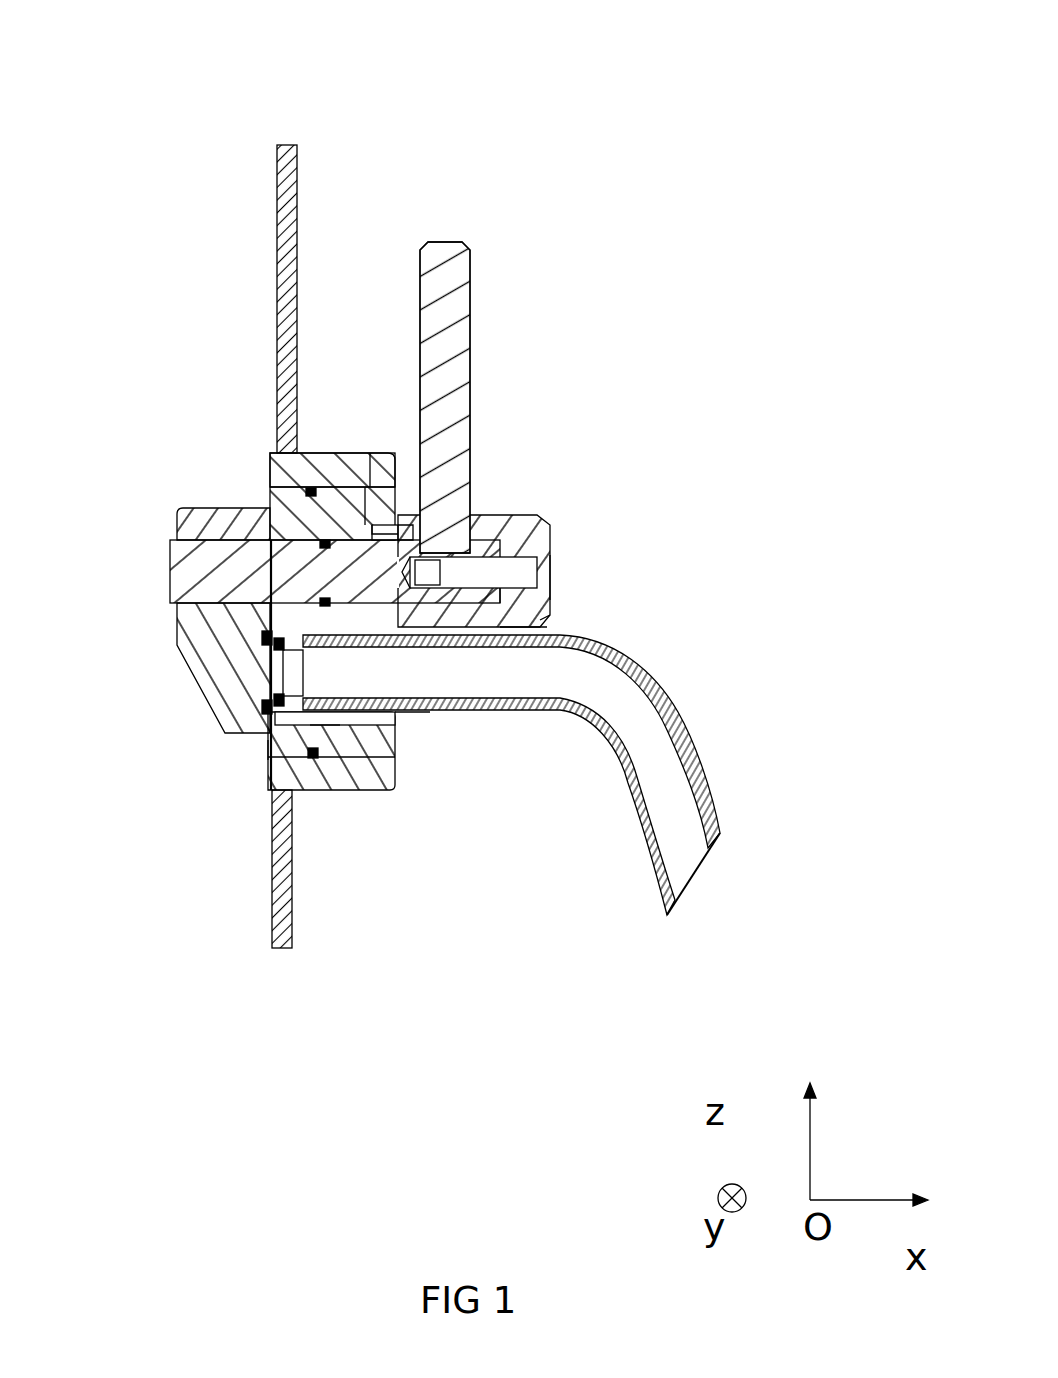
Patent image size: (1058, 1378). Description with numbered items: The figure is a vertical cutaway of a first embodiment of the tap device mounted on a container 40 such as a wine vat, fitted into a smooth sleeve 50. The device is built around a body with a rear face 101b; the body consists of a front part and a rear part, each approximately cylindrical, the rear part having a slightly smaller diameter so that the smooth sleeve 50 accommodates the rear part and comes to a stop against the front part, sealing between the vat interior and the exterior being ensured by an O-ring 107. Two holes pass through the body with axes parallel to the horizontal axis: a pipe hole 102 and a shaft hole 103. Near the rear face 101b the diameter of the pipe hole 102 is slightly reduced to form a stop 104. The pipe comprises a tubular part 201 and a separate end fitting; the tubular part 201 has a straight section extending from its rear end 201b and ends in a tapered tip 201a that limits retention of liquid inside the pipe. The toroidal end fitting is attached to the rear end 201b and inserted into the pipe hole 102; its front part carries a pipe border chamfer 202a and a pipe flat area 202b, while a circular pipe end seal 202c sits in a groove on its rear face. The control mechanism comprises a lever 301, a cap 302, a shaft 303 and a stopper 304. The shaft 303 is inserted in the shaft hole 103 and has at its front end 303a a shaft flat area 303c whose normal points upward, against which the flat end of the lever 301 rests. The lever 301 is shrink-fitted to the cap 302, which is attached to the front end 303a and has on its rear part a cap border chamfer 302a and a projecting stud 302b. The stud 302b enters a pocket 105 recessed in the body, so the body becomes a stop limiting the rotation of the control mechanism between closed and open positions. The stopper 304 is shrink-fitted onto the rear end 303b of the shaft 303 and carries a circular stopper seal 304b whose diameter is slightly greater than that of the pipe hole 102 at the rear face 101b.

The container 40 is at (150, 176).
The smooth sleeve 50 is at (313, 765).
The rear face 101b is at (268, 745).
The pipe hole 102 is at (430, 715).
The shaft hole 103 is at (270, 540).
The stop 104 is at (322, 745).
The pocket 105 is at (385, 525).
The O-ring 107 is at (300, 760).
The tubular part 201 is at (668, 705).
The tapered tip 201a is at (700, 866).
The rear end 201b is at (270, 728).
The pipe border chamfer 202a is at (547, 627).
The pipe flat area 202b is at (365, 760).
The pipe end seal 202c is at (275, 645).
The lever 301 is at (452, 238).
The cap 302 is at (500, 515).
The cap border chamfer 302a is at (740, 644).
The stud 302b is at (358, 487).
The shaft 303 is at (222, 555).
The front end 303a is at (550, 600).
The rear end 303b is at (167, 553).
The shaft flat area 303c is at (413, 540).
The stopper 304 is at (195, 625).
The stopper seal 304b is at (261, 632).